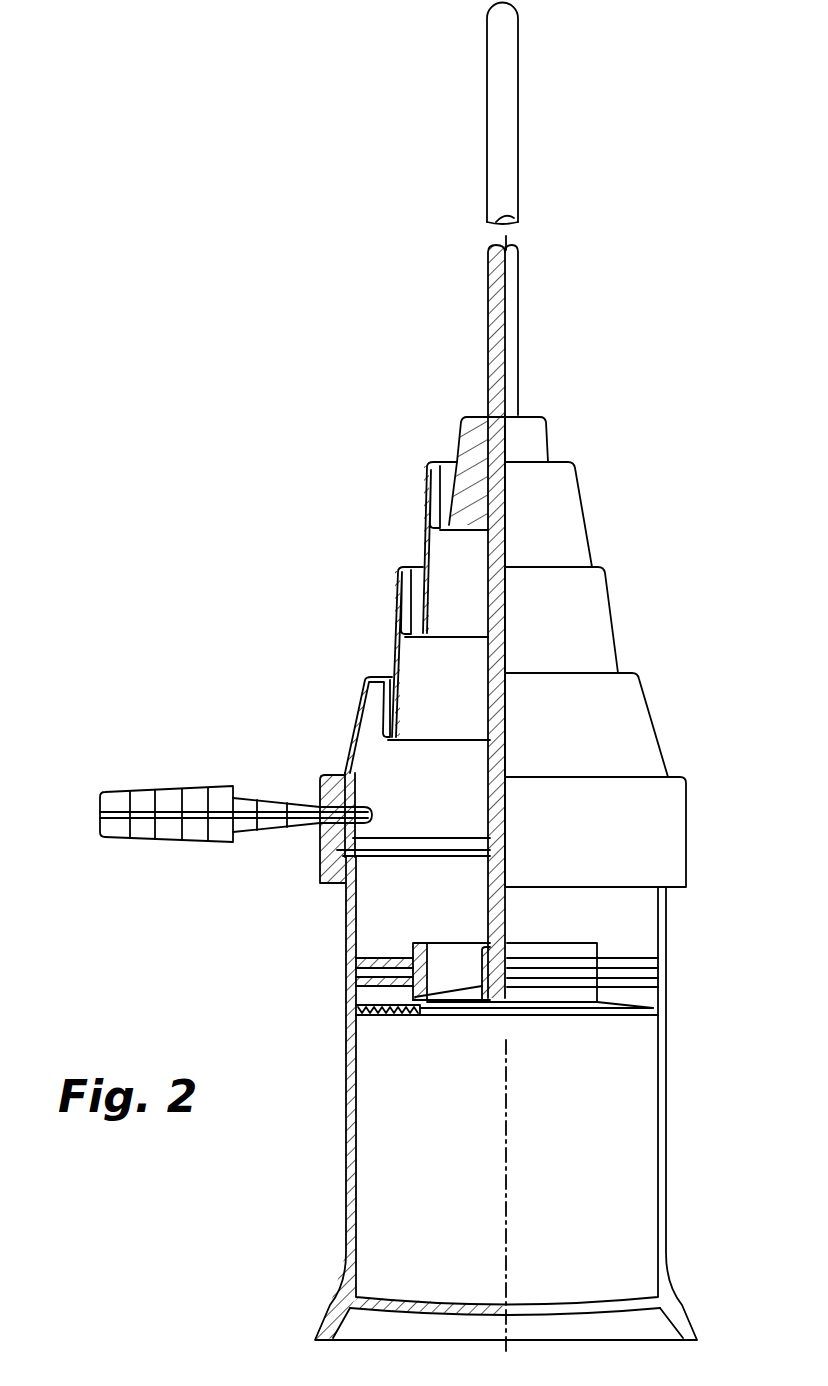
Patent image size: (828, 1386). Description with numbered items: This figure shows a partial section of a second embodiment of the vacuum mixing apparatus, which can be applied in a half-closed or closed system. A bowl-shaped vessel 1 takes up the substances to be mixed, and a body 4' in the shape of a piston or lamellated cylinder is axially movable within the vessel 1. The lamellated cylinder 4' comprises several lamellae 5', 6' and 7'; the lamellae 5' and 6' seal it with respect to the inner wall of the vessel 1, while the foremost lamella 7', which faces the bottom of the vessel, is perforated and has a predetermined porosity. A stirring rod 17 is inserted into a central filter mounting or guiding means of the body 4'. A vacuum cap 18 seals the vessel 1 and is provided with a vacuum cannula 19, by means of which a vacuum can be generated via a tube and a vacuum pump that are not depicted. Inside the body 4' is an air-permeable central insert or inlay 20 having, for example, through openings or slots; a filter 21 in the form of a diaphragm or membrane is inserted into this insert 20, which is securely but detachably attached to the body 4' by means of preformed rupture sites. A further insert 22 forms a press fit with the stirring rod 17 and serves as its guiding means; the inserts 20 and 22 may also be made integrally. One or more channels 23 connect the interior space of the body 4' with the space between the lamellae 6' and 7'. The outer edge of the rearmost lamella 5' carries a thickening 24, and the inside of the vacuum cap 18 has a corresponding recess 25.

The bowl-shaped vessel 1 is at (665, 1147).
The body 4' is at (540, 958).
The lamella 5' is at (582, 937).
The lamella 6' is at (605, 990).
The foremost lamella 7' is at (588, 1023).
The stirring rod 17 is at (519, 103).
The vacuum cap 18 is at (597, 599).
The vacuum cannula 19 is at (172, 793).
The central insert 20 is at (455, 997).
The filter 21 is at (445, 1010).
The further insert 22 is at (482, 952).
The channel 23 is at (480, 987).
The thickening 24 is at (356, 966).
The recess 25 is at (320, 841).